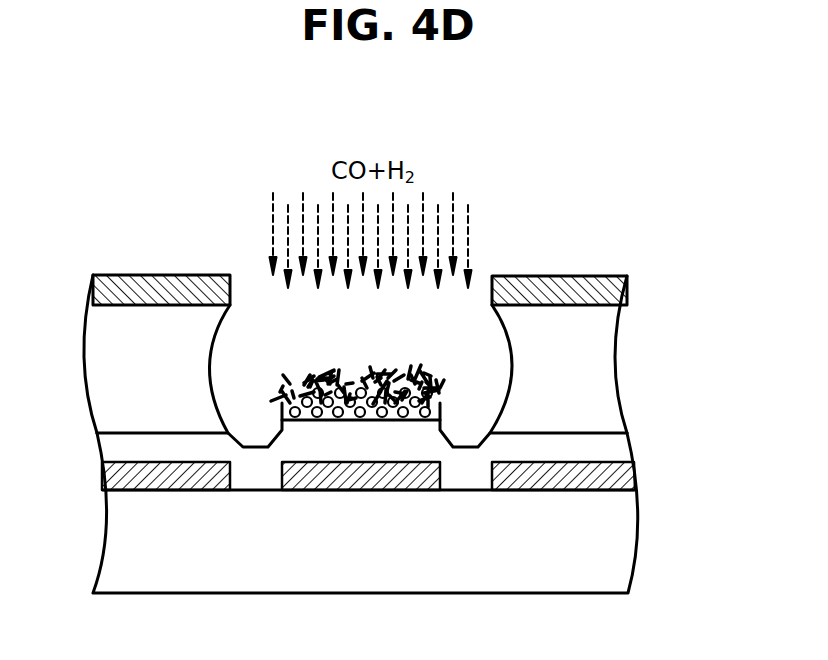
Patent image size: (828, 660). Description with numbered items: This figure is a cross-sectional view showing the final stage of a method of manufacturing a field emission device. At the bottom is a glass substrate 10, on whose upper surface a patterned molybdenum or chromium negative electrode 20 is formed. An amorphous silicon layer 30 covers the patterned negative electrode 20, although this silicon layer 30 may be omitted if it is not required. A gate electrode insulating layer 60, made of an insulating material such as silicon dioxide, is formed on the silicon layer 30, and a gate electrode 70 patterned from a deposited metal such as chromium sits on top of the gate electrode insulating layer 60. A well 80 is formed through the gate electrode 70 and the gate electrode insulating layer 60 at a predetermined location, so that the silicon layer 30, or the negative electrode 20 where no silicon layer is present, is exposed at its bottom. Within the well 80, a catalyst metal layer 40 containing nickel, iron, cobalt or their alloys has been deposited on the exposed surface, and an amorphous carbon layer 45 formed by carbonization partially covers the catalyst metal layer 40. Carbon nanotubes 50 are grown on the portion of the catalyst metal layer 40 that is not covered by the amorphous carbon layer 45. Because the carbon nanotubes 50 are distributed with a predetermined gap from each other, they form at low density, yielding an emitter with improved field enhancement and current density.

The substrate 10 is at (606, 547).
The negative electrode 20 is at (630, 481).
The silicon layer 30 is at (622, 450).
The catalyst metal layer 40 is at (440, 412).
The amorphous carbon layer 45 is at (282, 410).
The carbon nanotubes 50 is at (425, 378).
The gate electrode insulating layer 60 is at (600, 353).
The gate electrode 70 is at (600, 293).
The well 80 is at (478, 278).